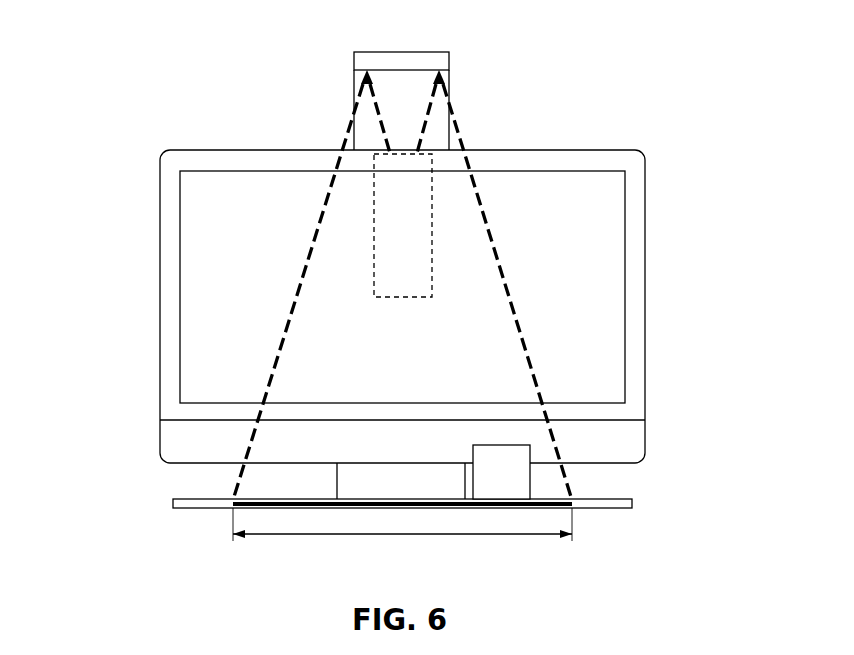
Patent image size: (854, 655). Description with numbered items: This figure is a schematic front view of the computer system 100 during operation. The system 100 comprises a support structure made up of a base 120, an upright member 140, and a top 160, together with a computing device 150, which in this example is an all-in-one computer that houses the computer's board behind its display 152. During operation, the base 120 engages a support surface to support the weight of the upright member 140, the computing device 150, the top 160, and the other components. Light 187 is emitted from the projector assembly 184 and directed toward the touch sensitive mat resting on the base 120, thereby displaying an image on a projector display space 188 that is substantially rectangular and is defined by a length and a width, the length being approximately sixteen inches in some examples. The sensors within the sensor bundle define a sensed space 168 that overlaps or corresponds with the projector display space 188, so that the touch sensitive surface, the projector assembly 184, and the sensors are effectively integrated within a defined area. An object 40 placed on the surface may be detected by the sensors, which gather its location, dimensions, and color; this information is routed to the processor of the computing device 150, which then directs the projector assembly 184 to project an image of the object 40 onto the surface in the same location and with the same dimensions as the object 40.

The computer system 100 is at (574, 95).
The computing device 150 is at (649, 208).
The display screen 152 is at (241, 214).
The upright member 140 is at (452, 109).
The top 160 is at (449, 43).
The light 187 is at (349, 128).
The projector assembly 184 is at (371, 234).
The base 120 is at (170, 498).
The object 40 is at (515, 442).
The projector display space 188 is at (272, 495).
The sensed space 168 is at (340, 401).